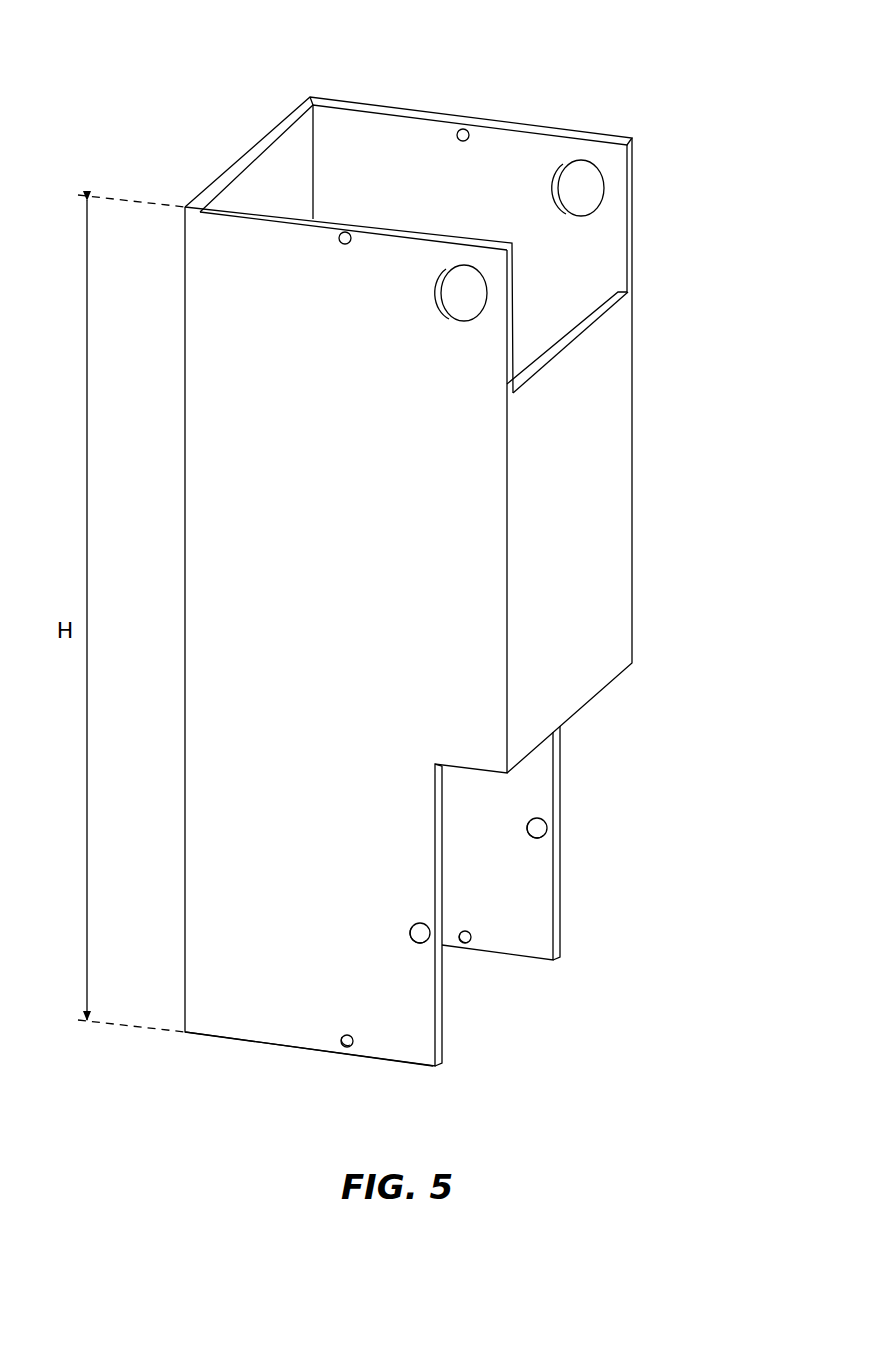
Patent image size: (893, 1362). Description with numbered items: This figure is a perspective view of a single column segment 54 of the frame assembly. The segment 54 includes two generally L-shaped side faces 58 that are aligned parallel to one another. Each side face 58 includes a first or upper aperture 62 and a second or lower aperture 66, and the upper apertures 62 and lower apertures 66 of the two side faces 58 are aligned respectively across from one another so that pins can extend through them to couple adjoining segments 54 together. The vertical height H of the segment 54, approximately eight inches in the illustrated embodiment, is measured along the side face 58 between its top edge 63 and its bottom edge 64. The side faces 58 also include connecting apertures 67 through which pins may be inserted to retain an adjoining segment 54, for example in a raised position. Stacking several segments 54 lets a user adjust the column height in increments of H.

The segment 54 is at (262, 72).
The side face 58 is at (398, 137).
The upper aperture 62 is at (576, 190).
The top edge 63 is at (263, 208).
The bottom edge 64 is at (223, 1038).
The lower aperture 66 is at (552, 828).
The connecting aperture 67 is at (336, 237).